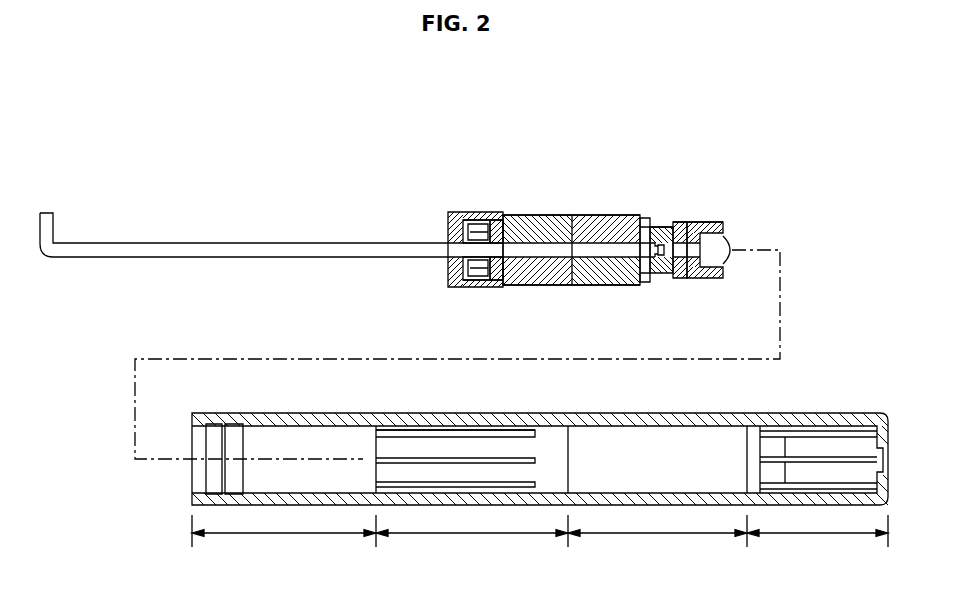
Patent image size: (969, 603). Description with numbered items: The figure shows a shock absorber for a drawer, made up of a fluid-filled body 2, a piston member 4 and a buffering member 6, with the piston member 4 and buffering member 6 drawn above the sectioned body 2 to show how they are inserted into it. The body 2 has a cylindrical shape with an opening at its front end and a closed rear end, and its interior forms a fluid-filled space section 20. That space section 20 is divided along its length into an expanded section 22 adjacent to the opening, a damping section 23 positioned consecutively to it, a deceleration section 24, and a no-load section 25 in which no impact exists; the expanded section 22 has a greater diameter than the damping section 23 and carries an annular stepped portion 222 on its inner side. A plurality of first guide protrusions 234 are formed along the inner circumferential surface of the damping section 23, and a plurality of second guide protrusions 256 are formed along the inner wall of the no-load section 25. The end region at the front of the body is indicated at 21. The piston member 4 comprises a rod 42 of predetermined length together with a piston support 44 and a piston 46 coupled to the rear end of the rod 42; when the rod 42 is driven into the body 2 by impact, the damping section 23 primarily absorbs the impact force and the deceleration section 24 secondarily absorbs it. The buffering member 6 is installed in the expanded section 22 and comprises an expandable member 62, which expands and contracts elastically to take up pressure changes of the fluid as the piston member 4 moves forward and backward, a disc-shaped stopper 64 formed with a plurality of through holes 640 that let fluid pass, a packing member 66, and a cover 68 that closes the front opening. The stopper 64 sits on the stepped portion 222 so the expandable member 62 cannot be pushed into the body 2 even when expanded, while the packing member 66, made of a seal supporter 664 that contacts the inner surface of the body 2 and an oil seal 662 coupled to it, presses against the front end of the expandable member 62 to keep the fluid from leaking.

The body 2 is at (814, 412).
The piston member 4 is at (723, 207).
The buffering member 6 is at (642, 205).
The space section 20 is at (634, 455).
The end cap 21 is at (195, 478).
The expanded section 22 is at (284, 537).
The damping section 23 is at (472, 537).
The deceleration section 24 is at (657, 537).
The no-load section 25 is at (817, 537).
The rod 42 is at (252, 250).
The piston support 44 is at (678, 282).
The piston 46 is at (722, 279).
The expandable member 62 is at (585, 287).
The stopper 64 is at (640, 287).
The packing member 66 is at (467, 327).
The cover 68 is at (447, 272).
The annular stepped portion 222 is at (375, 433).
The first guide protrusions 234 is at (433, 458).
The second guide protrusions 256 is at (851, 458).
The through holes 640 is at (650, 284).
The oil seal 662 is at (475, 288).
The seal supporter 664 is at (494, 288).